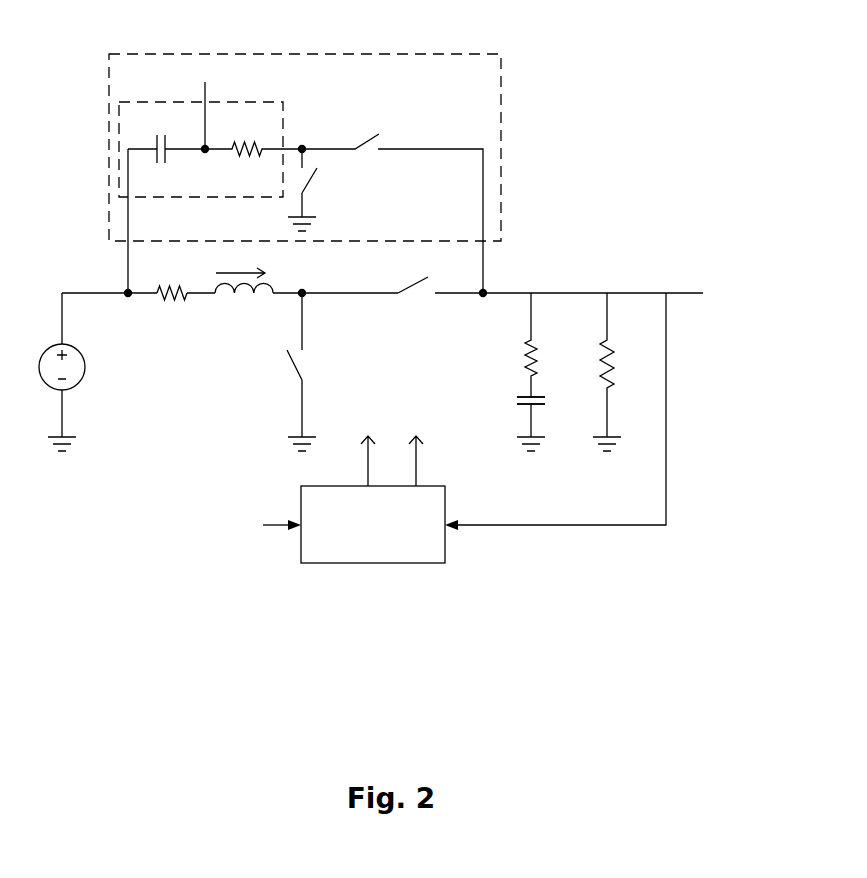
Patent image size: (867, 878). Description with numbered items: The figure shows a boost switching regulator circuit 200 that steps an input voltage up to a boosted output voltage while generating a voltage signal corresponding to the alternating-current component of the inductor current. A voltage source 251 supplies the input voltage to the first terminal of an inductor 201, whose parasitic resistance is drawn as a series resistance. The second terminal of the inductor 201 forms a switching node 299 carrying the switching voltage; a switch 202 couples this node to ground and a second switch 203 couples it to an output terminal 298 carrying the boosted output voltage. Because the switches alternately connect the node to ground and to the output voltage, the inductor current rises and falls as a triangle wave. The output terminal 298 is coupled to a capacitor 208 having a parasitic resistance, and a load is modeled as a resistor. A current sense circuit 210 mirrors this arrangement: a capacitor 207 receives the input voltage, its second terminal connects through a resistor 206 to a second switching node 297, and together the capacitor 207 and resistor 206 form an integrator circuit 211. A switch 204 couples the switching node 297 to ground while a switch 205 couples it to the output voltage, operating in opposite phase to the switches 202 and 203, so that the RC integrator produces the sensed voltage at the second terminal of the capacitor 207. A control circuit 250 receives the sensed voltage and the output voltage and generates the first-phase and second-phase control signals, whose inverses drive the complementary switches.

The boost switching regulator circuit 200 is at (392, 289).
The current sense circuit 210 is at (305, 147).
The integrator circuit 211 is at (201, 149).
The capacitor 207 is at (166, 148).
The resistor 206 is at (253, 146).
The second switching node 297 is at (304, 139).
The switch 204 is at (314, 190).
The switch 205 is at (392, 213).
The inductor 201 is at (244, 307).
The switching node 299 is at (304, 274).
The switch 202 is at (286, 372).
The second switch 203 is at (417, 307).
The output terminal 298 is at (573, 283).
The voltage source 251 is at (79, 367).
The capacitor 208 is at (512, 410).
The control circuit 250 is at (373, 524).